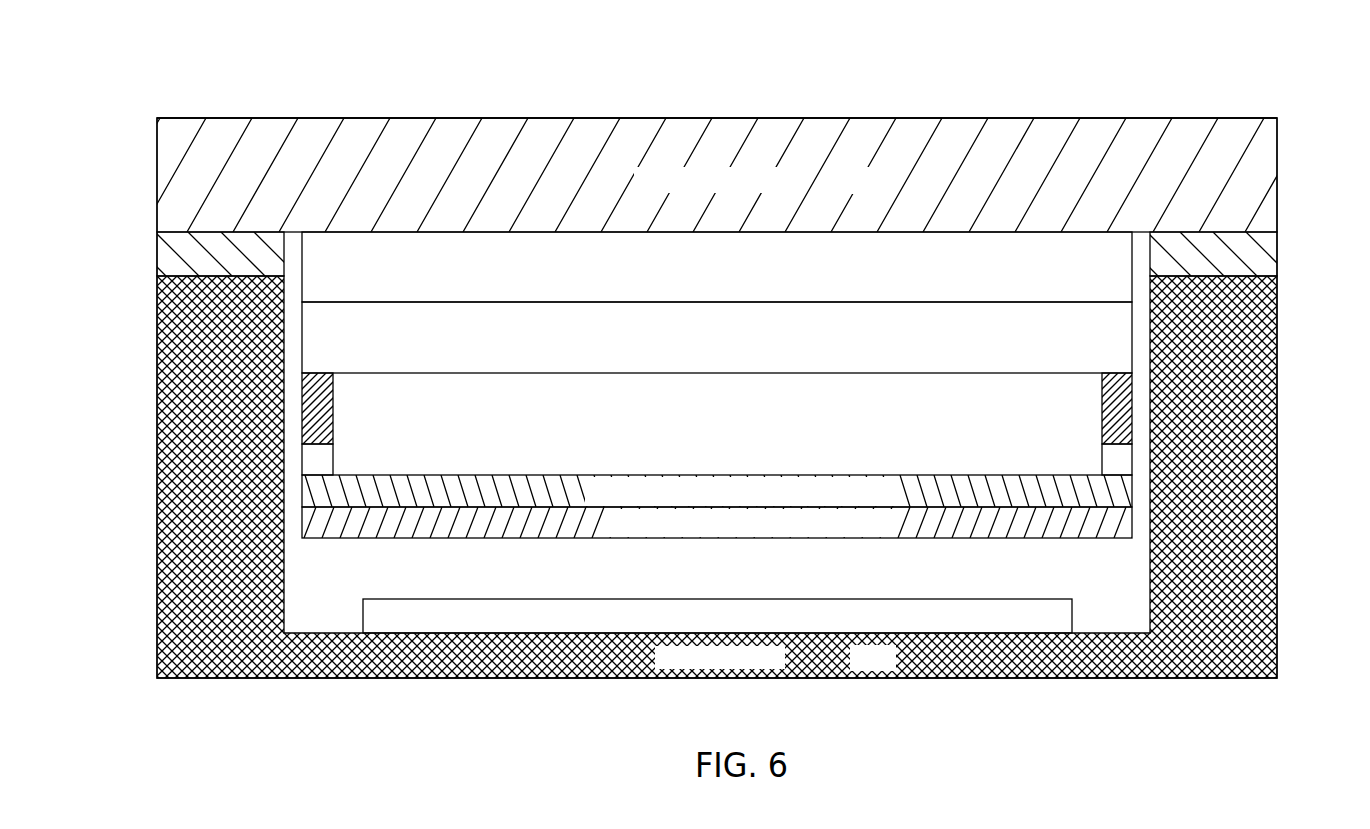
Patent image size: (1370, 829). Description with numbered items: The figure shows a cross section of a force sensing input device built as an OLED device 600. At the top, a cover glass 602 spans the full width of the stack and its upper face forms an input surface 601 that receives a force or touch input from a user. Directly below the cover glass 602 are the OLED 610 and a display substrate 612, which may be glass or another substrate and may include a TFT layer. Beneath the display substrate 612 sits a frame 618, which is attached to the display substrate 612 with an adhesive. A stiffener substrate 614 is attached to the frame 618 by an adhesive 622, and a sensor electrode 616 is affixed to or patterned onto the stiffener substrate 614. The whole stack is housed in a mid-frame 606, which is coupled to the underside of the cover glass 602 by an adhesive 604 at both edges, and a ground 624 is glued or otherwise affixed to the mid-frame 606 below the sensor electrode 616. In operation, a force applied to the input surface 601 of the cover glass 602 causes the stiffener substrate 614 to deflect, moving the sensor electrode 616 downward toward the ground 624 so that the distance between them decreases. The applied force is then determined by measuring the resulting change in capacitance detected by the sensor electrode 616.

The OLED device 600 is at (1226, 86).
The input surface 601 is at (562, 118).
The cover glass 602 is at (888, 190).
The adhesive 604 is at (1310, 253).
The mid-frame 606 is at (890, 668).
The OLED 610 is at (888, 275).
The display substrate 612 is at (889, 353).
The stiffener substrate 614 is at (892, 505).
The sensor electrode 616 is at (887, 535).
The frame 618 is at (328, 409).
The adhesive 622 is at (325, 458).
The ground 624 is at (892, 628).